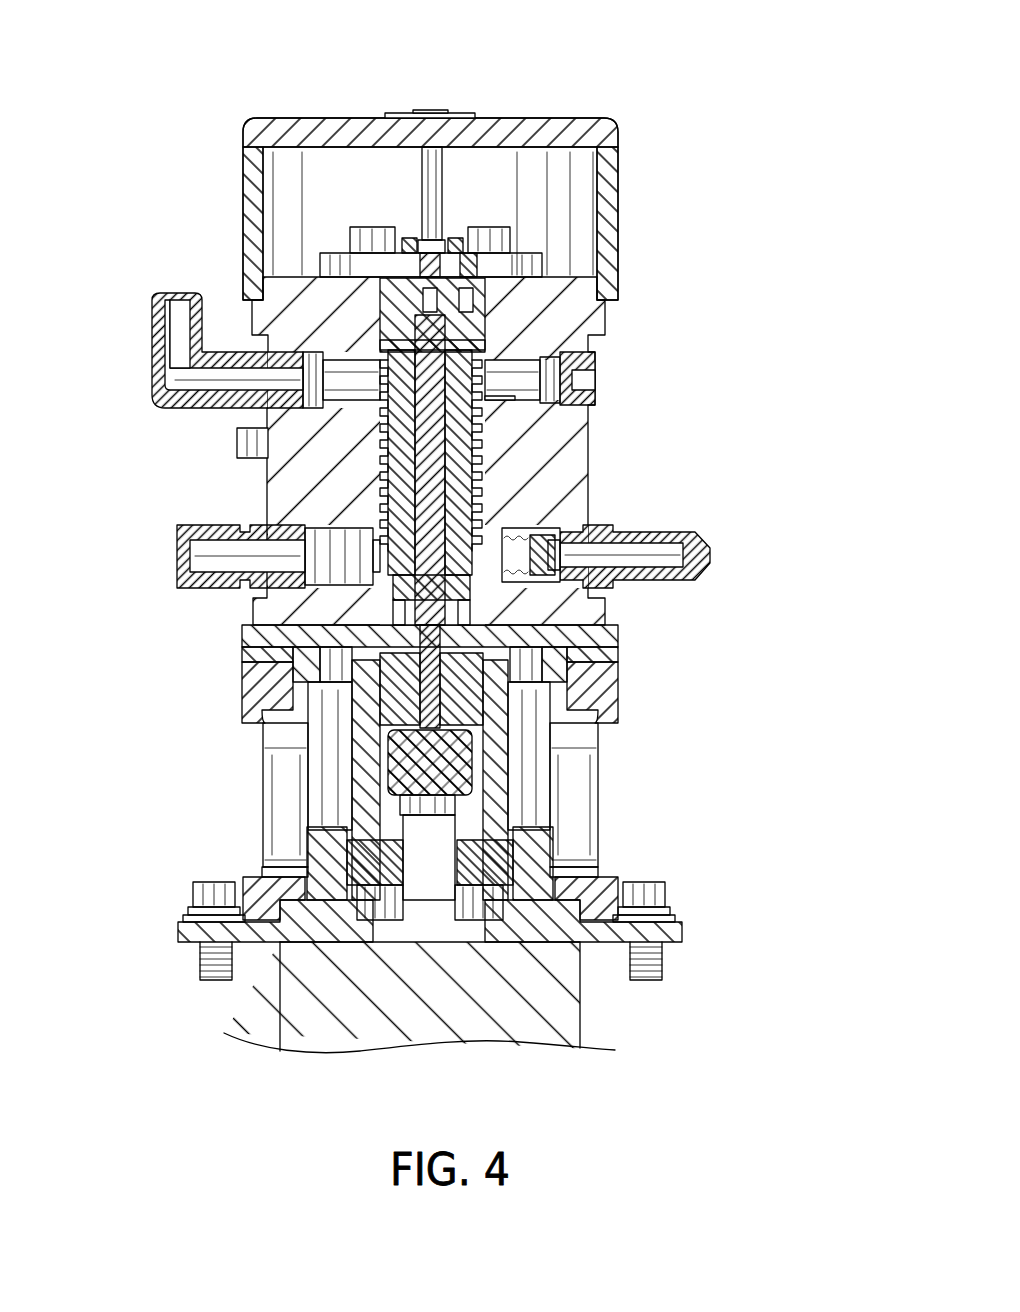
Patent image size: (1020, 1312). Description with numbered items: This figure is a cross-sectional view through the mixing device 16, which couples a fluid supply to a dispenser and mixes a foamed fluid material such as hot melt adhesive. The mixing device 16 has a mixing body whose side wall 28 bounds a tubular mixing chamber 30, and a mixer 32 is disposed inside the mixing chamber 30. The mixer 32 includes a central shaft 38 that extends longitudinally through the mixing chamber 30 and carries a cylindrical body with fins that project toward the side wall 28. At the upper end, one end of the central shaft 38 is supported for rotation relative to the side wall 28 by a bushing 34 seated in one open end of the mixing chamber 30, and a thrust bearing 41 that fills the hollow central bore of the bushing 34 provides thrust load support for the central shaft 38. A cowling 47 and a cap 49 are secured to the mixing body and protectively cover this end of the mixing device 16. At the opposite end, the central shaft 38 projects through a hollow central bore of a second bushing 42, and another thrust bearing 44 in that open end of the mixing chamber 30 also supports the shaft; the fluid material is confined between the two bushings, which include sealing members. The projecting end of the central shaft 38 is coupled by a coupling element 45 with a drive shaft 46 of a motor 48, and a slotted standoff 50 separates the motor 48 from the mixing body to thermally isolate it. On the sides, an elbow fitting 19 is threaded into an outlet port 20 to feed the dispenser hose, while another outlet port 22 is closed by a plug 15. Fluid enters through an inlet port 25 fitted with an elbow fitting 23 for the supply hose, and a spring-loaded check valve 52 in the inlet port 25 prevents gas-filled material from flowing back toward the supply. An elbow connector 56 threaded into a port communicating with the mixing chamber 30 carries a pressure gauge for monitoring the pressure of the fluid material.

The mixing device 16 is at (595, 63).
The cowling 47 is at (606, 152).
The cap 49 is at (540, 135).
The central shaft 38 is at (483, 348).
The mixing chamber 30 is at (500, 360).
The bushing 34 is at (412, 285).
The thrust bearing 41 is at (422, 298).
The side wall 28 is at (580, 468).
The elbow fitting 19 is at (152, 358).
The plug 15 is at (597, 355).
The outlet port 20 is at (347, 398).
The outlet port 22 is at (517, 397).
The mixer 32 is at (402, 488).
The elbow connector 56 is at (177, 548).
The spring-loaded check valve 52 is at (562, 533).
The elbow fitting 23 is at (710, 548).
The inlet port 25 is at (552, 580).
The bushing 42 is at (497, 625).
The coupling element 45 is at (386, 700).
The thrust bearing 44 is at (400, 763).
The standoff 50 is at (597, 740).
The drive shaft 46 is at (427, 838).
The motor 48 is at (565, 1005).